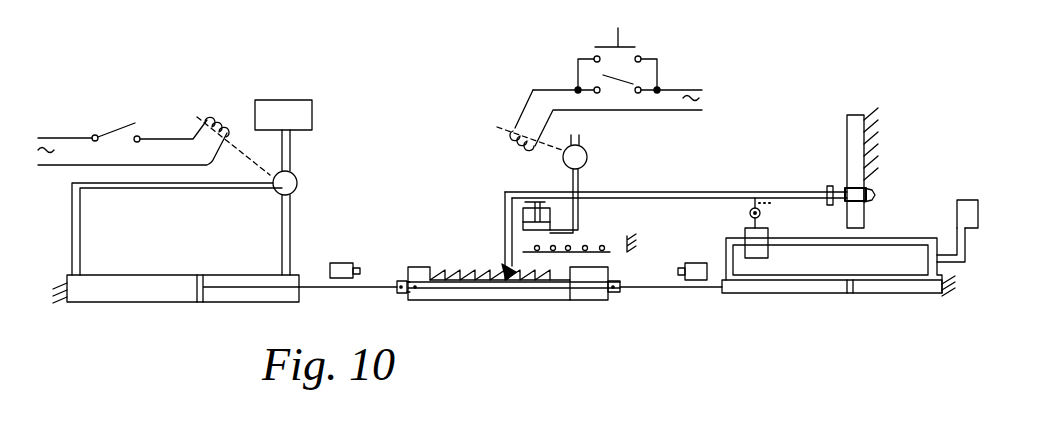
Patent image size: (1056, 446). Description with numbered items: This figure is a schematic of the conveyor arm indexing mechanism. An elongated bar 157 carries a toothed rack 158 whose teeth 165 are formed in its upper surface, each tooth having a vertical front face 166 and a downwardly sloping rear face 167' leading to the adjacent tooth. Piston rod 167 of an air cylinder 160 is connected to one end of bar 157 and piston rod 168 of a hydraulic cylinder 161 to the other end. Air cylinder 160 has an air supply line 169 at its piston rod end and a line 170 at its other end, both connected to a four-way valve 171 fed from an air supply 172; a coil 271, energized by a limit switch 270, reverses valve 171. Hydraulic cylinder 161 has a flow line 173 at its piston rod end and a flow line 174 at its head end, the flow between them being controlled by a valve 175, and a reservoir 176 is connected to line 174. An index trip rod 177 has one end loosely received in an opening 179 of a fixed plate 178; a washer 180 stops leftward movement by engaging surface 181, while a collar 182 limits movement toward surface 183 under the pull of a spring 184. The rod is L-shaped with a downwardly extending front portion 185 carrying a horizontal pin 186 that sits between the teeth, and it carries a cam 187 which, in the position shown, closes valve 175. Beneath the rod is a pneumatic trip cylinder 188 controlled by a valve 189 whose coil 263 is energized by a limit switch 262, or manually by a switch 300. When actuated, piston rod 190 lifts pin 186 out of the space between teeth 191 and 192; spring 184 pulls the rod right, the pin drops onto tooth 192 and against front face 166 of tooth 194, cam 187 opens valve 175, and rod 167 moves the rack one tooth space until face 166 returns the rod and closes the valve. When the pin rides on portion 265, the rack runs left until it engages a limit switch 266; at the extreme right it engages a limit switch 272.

The elongated bar 157 is at (433, 297).
The toothed rack 158 is at (420, 268).
The air cylinder 160 is at (217, 272).
The hydraulic cylinder 161 is at (866, 294).
The teeth 165 is at (565, 292).
The vertical front face 166 is at (545, 272).
The piston rod 167 is at (510, 305).
The downwardly sloping rear face 167' is at (614, 266).
The piston rod 168 is at (677, 288).
The air supply line 169 is at (290, 218).
The line 170 is at (80, 228).
The valve 171 is at (297, 178).
The air supply 172 is at (313, 111).
The flow line 173 is at (727, 250).
The flow line 174 is at (879, 254).
The valve 175 is at (762, 228).
The reservoir 176 is at (978, 200).
The index trip rod 177 is at (600, 191).
The fixed plate 178 is at (847, 133).
The opening 179 is at (850, 188).
The washer 180 is at (877, 185).
The surface 181 is at (864, 215).
The collar 182 is at (827, 190).
The surface 183 is at (847, 222).
The spring 184 is at (610, 252).
The downwardly extending front portion 185 is at (503, 223).
The horizontal pin 186 is at (502, 266).
The cam 187 is at (743, 199).
The pneumatic trip cylinder 188 is at (538, 197).
The valve 189 is at (588, 152).
The piston rod 190 is at (505, 193).
The tooth 191 is at (505, 275).
The tooth 192 is at (525, 276).
The tooth 194 is at (537, 276).
The limit switch 262 is at (633, 84).
The coil 263 is at (510, 147).
The portion 265 is at (600, 292).
The limit switch 266 is at (340, 263).
The limit switch 270 is at (110, 130).
The coil 271 is at (222, 112).
The limit switch 272 is at (700, 281).
The switch 300 is at (635, 45).